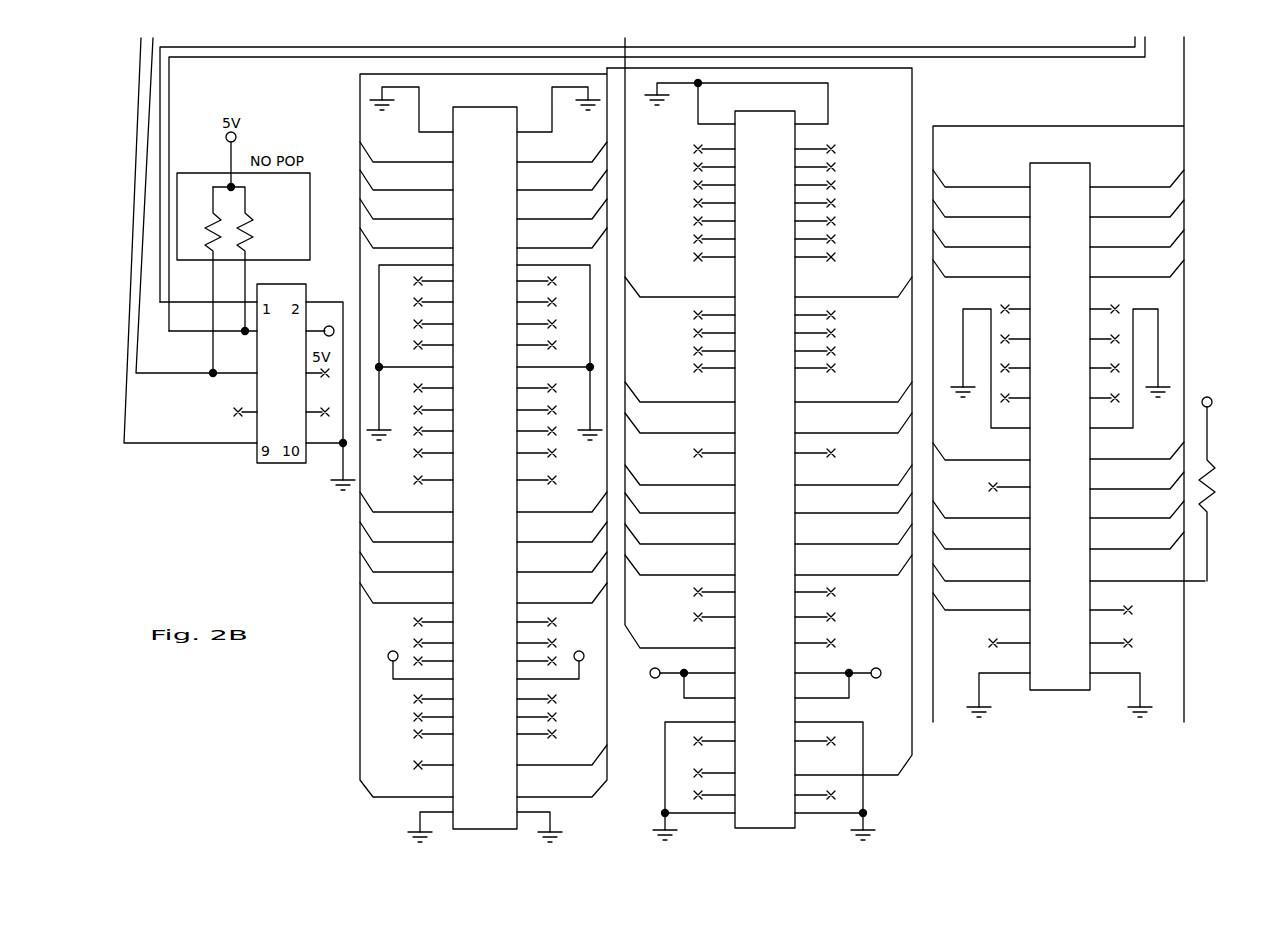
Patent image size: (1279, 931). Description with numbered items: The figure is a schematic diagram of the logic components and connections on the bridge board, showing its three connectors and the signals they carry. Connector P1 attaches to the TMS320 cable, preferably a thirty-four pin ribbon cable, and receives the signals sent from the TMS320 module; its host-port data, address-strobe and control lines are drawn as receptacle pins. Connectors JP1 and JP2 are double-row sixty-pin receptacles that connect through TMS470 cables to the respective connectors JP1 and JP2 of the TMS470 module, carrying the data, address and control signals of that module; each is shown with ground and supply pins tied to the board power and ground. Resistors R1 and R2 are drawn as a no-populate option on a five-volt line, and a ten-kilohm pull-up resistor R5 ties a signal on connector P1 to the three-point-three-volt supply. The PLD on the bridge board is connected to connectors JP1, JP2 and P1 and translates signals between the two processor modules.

The resistor R1 (no pop) R1 is at (202, 280).
The resistor R2 (no pop) R2 is at (245, 259).
The 10K pull-up resistor R5 is at (1217, 480).
The connector JP1 is at (759, 448).
The connector JP2 is at (483, 462).
The connector P1 is at (1069, 379).